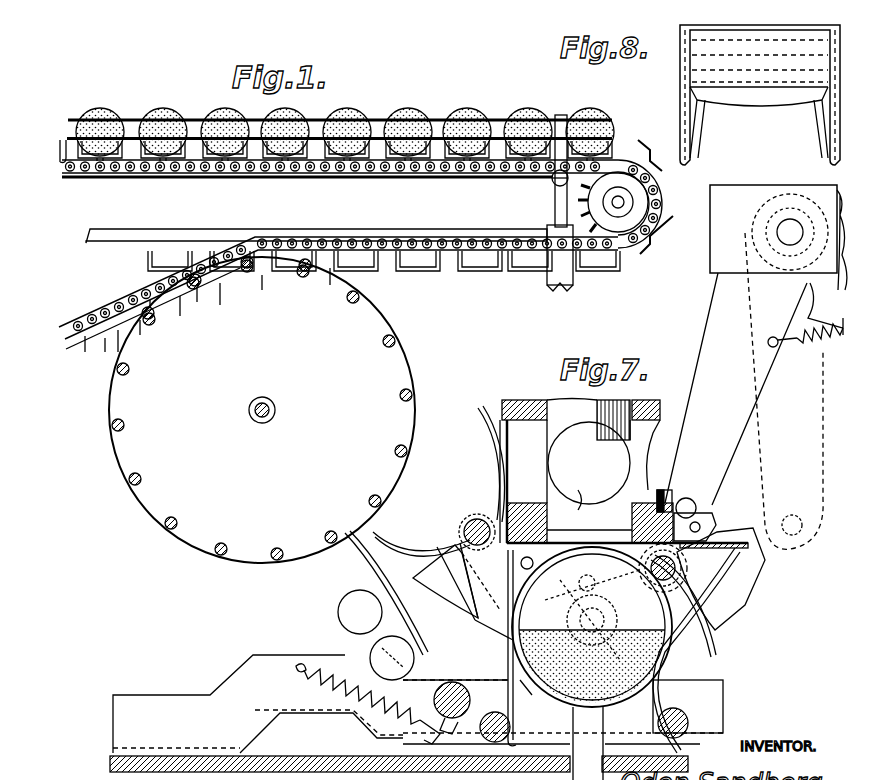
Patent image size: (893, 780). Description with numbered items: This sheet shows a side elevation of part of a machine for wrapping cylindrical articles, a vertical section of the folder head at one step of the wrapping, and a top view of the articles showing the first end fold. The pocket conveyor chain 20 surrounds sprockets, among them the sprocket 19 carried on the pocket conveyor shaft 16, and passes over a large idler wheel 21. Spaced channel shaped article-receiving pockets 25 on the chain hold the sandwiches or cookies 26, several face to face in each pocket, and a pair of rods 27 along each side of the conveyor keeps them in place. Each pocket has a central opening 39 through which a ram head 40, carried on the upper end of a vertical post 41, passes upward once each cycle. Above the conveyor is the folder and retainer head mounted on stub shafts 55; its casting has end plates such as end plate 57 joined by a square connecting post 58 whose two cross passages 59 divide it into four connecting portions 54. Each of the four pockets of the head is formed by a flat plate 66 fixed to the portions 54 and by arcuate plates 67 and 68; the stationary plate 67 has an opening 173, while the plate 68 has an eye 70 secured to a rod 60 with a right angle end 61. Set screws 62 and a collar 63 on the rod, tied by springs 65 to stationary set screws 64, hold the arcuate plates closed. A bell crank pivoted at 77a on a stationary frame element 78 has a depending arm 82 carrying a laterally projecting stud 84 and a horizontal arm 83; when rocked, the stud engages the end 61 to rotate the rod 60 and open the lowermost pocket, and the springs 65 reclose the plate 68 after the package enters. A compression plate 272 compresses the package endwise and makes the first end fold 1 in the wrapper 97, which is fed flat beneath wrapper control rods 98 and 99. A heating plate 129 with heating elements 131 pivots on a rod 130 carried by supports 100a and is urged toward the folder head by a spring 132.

In FIG. 1, the rods 27 is at (130, 132).
In FIG. 1, the sandwiches or cookies 26 is at (200, 118).
In FIG. 8, the sandwiches or cookies 26 is at (782, 50).
In FIG. 1, the pocket conveyor chain 20 is at (204, 176).
In FIG. 1, the article-receiving pockets 25 is at (628, 150).
In FIG. 1, the pocket conveyor shaft 16 is at (625, 202).
In FIG. 1, the sprocket 19 is at (645, 218).
In FIG. 1, the central opening 39 is at (176, 290).
In FIG. 1, the large idler wheel 21 is at (394, 357).
In FIG. 8, the first end fold 1 is at (759, 100).
In FIG. 8, the wrapper 97 is at (815, 135).
In FIG. 7, the wrapper 97 is at (660, 744).
In FIG. 7, the connecting portions 54 is at (522, 395).
In FIG. 7, the square connecting post 58 is at (620, 398).
In FIG. 7, the stub shafts 55 is at (560, 448).
In FIG. 7, the opening 173 is at (498, 466).
In FIG. 7, the arcuate plates 67 is at (478, 410).
In FIG. 7, the cross passages 59 is at (576, 536).
In FIG. 7, the right angle end 61 is at (657, 490).
In FIG. 7, the laterally projecting stud 84 is at (688, 498).
In FIG. 7, the depending arm 82 is at (740, 300).
In FIG. 7, the stationary frame element 78 is at (712, 261).
In FIG. 7, the bell crank pivot 77a is at (783, 224).
In FIG. 7, the horizontal arm 83 is at (815, 296).
In FIG. 7, the flat plate 66 is at (720, 545).
In FIG. 7, the rod 60 is at (465, 525).
In FIG. 7, the arcuate plate 68 is at (404, 542).
In FIG. 7, the eye 70 is at (728, 560).
In FIG. 7, the collar 63 is at (690, 556).
In FIG. 7, the end plate 57 is at (468, 581).
In FIG. 7, the set screws 62 is at (728, 612).
In FIG. 7, the compression plate 272 is at (485, 620).
In FIG. 7, the stationary set screws 64 is at (592, 627).
In FIG. 7, the springs 65 is at (604, 743).
In FIG. 7, the heating plate 129 is at (360, 572).
In FIG. 7, the heating elements 131 is at (378, 650).
In FIG. 7, the spring 132 is at (314, 690).
In FIG. 7, the supports 100a is at (737, 687).
In FIG. 7, the rod 130 is at (462, 682).
In FIG. 7, the wrapper control rod 98 is at (494, 712).
In FIG. 7, the wrapper control rod 99 is at (673, 708).
In FIG. 7, the ram head 40 is at (473, 704).
In FIG. 7, the vertical post 41 is at (572, 744).